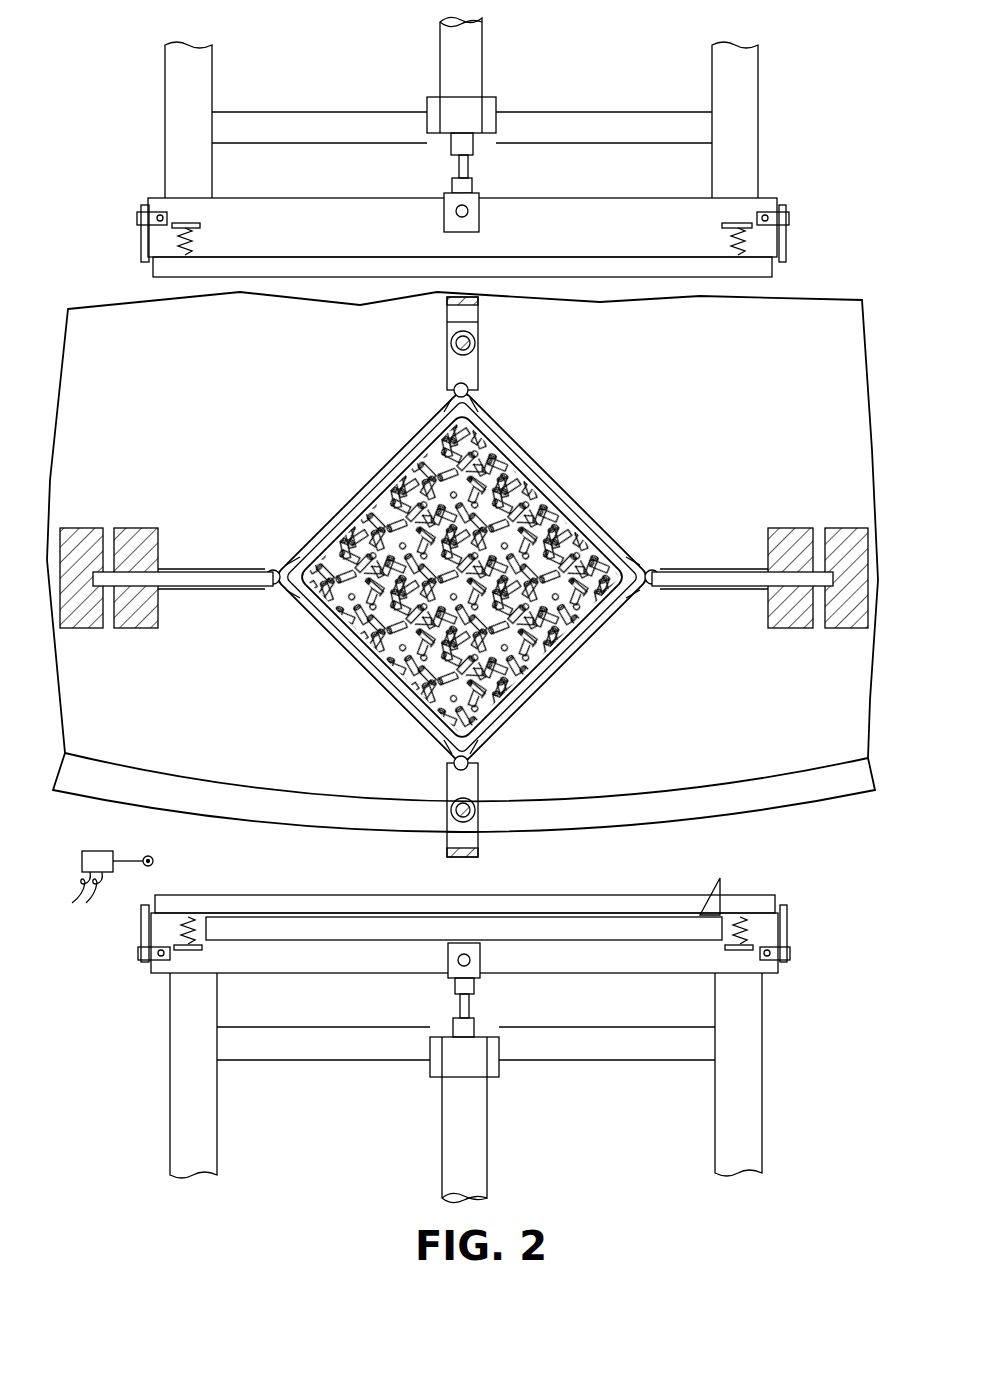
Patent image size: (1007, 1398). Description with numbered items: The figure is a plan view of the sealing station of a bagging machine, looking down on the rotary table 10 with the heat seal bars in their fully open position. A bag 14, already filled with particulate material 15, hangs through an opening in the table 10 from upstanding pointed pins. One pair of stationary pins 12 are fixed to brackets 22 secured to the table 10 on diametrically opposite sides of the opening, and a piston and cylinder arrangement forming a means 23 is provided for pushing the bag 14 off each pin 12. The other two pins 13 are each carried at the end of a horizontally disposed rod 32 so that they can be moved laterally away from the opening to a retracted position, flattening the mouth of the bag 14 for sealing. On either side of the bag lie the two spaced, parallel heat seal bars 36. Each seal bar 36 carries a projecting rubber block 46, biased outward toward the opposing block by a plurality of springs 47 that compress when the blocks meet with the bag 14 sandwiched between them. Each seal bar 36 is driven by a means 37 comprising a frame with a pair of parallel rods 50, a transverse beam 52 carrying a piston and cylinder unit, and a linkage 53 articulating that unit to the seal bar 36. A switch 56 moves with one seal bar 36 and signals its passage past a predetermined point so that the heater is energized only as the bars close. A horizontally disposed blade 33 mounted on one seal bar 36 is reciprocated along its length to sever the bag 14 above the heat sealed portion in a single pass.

The table 10 is at (115, 313).
The pin 12 is at (470, 387).
The laterally movable pin 13 is at (267, 585).
The bag 14 is at (557, 470).
The particulate material 15 is at (567, 527).
The bracket 22 is at (477, 300).
The means for moving a bag off each pin 23 is at (430, 347).
The rod 32 is at (213, 572).
The blade 33 is at (710, 905).
The heat seal bar 36 is at (327, 207).
The means for moving the heat seal bars 37 is at (535, 51).
The rubber block 46 is at (362, 263).
The spring 47 is at (202, 242).
The rod 50 is at (205, 82).
The transverse beam 52 is at (362, 117).
The linkage 53 is at (480, 182).
The switch 56 is at (102, 852).